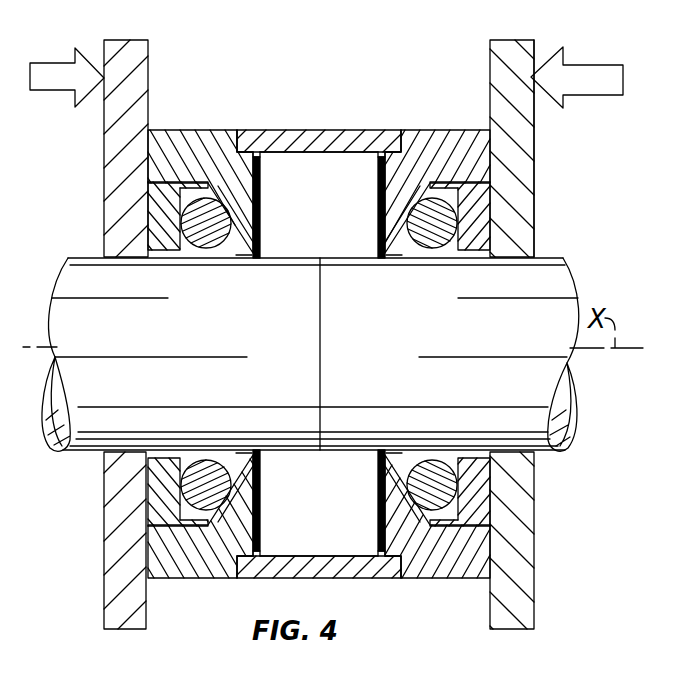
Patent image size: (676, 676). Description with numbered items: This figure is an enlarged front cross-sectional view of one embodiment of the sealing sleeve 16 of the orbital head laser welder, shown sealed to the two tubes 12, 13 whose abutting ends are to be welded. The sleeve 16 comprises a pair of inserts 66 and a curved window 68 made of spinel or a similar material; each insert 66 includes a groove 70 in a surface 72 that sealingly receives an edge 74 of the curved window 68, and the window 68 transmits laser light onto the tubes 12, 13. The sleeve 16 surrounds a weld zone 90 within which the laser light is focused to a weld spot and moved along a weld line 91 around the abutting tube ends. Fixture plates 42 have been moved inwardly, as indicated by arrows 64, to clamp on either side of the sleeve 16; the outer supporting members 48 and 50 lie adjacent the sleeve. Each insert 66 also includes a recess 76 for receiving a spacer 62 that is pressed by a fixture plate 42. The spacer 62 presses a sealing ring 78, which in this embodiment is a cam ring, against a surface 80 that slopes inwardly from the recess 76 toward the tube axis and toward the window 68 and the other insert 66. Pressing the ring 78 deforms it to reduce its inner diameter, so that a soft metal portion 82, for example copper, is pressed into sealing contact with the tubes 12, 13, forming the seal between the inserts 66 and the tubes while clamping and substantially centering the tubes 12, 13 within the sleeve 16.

The tube 12 is at (560, 288).
The tube 13 is at (85, 284).
The sleeve 16 is at (180, 128).
The plate 42 is at (533, 235).
The support wall 48 is at (122, 124).
The lower support wall 50 is at (115, 488).
The spacer 62 is at (157, 223).
The arrow 64 is at (56, 68).
The insert 66 is at (215, 128).
The curved window 68 is at (325, 128).
The groove 70 is at (253, 128).
The surface 72 is at (262, 197).
The edge 74 is at (262, 160).
The recess 76 is at (170, 200).
The sealing ring 78 is at (245, 255).
The surface 80 is at (236, 212).
The soft metal portion 82 is at (233, 260).
The weld zone 90 is at (337, 237).
The weld line 91 is at (322, 362).